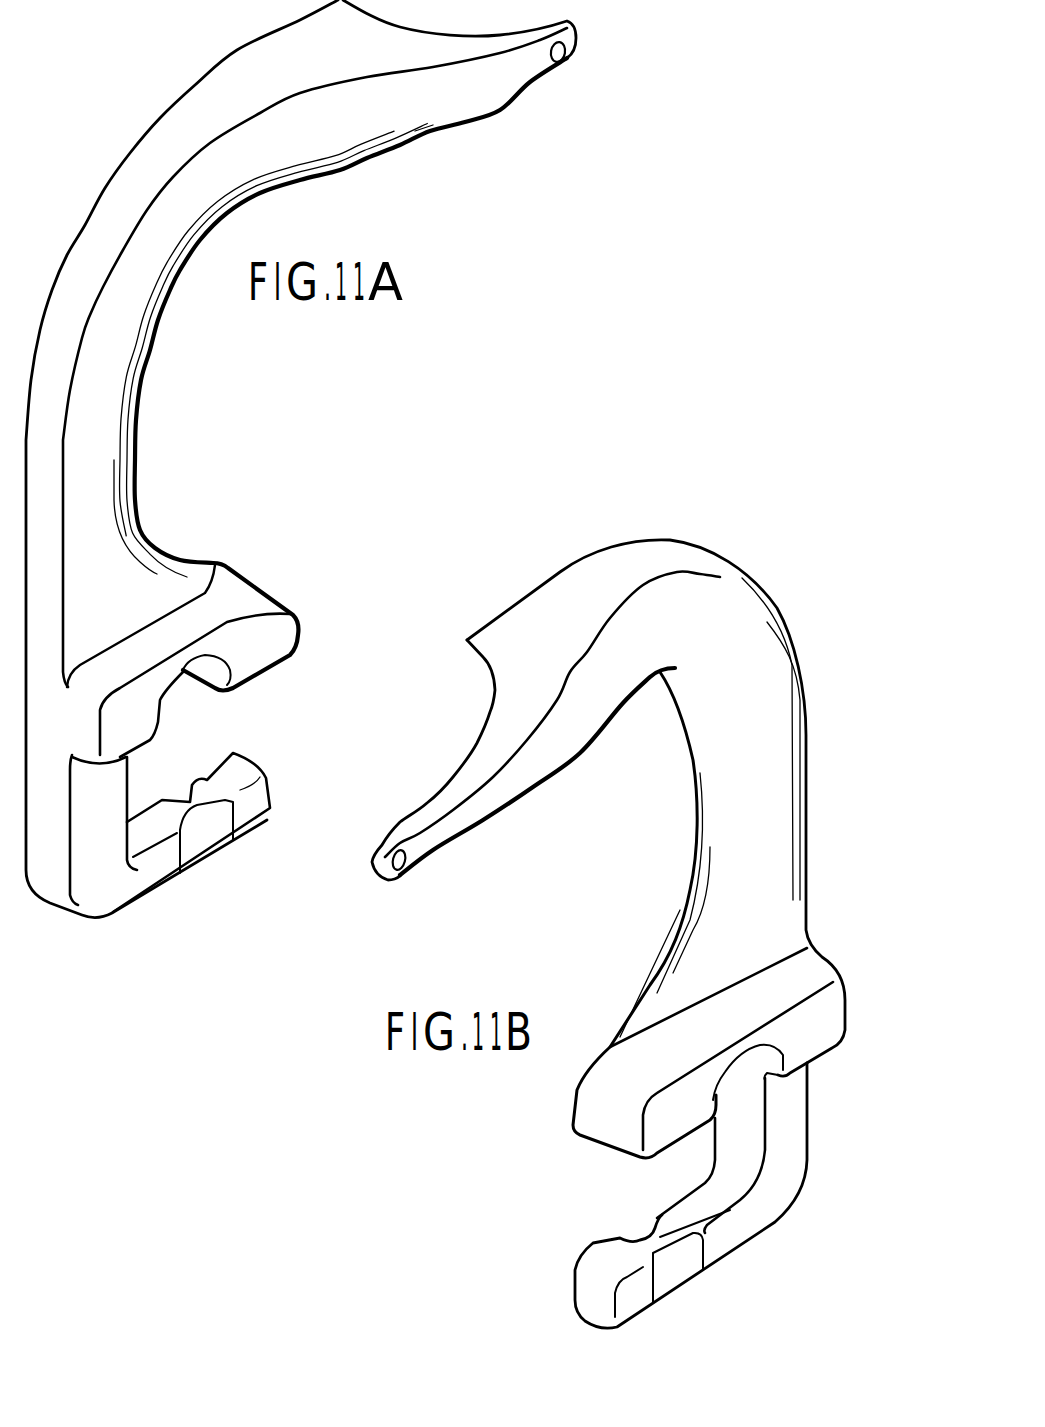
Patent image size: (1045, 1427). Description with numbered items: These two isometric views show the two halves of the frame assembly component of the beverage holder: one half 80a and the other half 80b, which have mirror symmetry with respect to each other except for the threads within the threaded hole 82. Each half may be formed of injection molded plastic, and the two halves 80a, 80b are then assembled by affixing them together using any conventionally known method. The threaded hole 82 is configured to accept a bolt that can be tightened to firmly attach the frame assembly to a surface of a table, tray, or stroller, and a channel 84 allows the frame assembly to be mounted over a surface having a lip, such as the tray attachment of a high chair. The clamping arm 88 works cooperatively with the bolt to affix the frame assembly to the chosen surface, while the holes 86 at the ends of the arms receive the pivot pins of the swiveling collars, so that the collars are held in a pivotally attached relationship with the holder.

In FIG. 11B, the frame assembly half 80a is at (798, 600).
In FIG. 11A, the frame assembly half 80b is at (148, 84).
In FIG. 11A, the threaded hole 82 is at (178, 800).
In FIG. 11B, the threaded hole 82 is at (633, 1238).
In FIG. 11A, the channel 84 is at (185, 676).
In FIG. 11A, the hole 86 is at (568, 58).
In FIG. 11B, the hole 86 is at (400, 872).
In FIG. 11B, the clamping arm 88 is at (605, 1123).